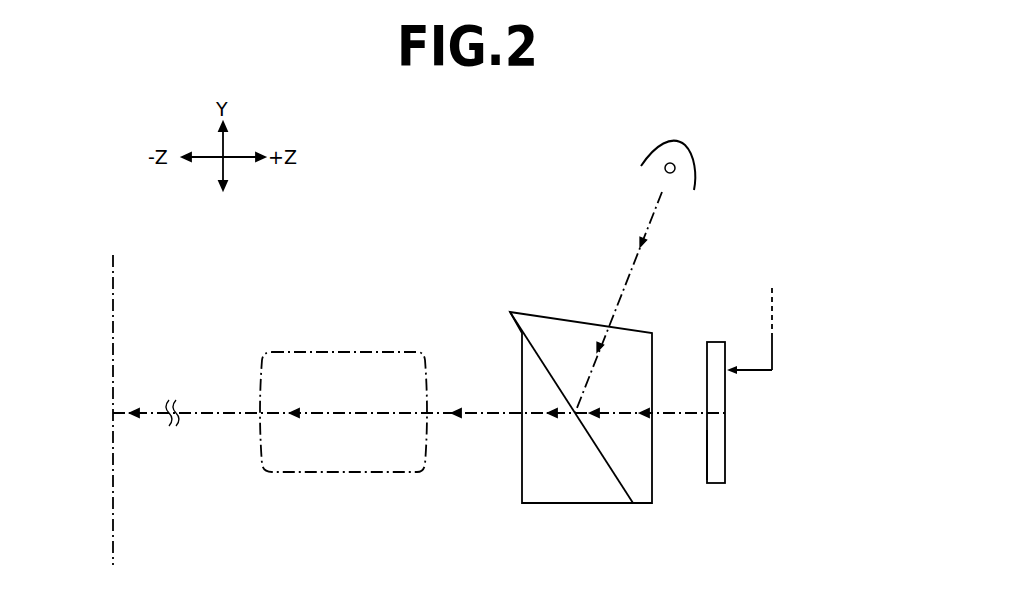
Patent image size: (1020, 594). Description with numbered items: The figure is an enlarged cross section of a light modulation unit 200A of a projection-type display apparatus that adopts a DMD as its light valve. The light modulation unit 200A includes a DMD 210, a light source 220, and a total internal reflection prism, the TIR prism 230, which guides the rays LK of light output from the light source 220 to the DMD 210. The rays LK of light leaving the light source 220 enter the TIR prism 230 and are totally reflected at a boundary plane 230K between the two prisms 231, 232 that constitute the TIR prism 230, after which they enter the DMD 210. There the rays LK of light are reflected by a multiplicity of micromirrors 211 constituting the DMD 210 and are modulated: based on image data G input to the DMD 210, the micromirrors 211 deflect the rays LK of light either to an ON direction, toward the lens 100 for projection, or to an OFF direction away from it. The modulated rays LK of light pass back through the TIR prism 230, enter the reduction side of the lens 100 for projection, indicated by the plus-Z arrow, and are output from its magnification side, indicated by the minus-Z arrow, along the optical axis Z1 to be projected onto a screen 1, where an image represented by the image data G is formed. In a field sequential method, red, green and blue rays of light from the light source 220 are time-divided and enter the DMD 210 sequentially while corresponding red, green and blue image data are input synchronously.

The screen 1 is at (114, 299).
The optical axis Z1 is at (191, 411).
The lens for projection 100 is at (316, 346).
The rays of light LK is at (486, 410).
The total internal reflection prism 230 is at (590, 401).
The boundary plane 230K is at (535, 346).
The prism 231 is at (580, 330).
The prism 232 is at (548, 506).
The light source 220 is at (644, 149).
The light modulation unit 200A is at (769, 105).
The DMD 210 is at (718, 334).
The micromirrors 211 is at (707, 440).
The image data G is at (776, 362).